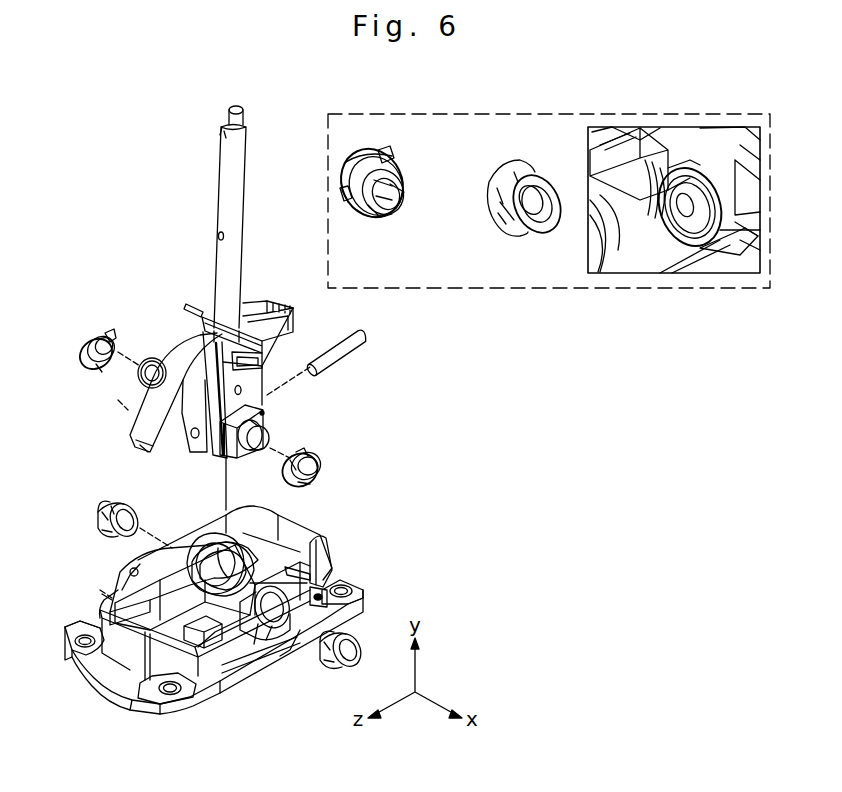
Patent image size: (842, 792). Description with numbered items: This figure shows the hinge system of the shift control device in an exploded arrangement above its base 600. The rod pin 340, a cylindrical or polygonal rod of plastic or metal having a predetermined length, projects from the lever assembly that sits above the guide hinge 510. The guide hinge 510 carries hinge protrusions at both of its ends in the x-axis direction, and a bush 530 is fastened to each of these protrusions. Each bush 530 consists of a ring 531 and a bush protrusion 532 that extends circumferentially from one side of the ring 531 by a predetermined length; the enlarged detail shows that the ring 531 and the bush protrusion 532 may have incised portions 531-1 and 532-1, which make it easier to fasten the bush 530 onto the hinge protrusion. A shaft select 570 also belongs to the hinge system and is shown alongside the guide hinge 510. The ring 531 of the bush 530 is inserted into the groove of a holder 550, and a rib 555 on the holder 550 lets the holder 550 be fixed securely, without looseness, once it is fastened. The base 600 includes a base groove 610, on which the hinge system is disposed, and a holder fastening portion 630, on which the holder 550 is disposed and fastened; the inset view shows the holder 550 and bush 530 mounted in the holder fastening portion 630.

The rod pin 340 is at (187, 303).
The guide hinge 510 is at (267, 422).
The bush 530 is at (356, 136).
The ring 531 is at (360, 212).
The incised portion 531-1 is at (401, 190).
The bush protrusion 532 is at (396, 164).
The incised portion 532-1 is at (346, 202).
The holder 550 is at (508, 145).
The rib 555 is at (505, 214).
The shaft select 570 is at (346, 350).
The base 600 is at (356, 552).
The base groove 610 is at (283, 548).
The holder fastening portion 630 is at (206, 564).